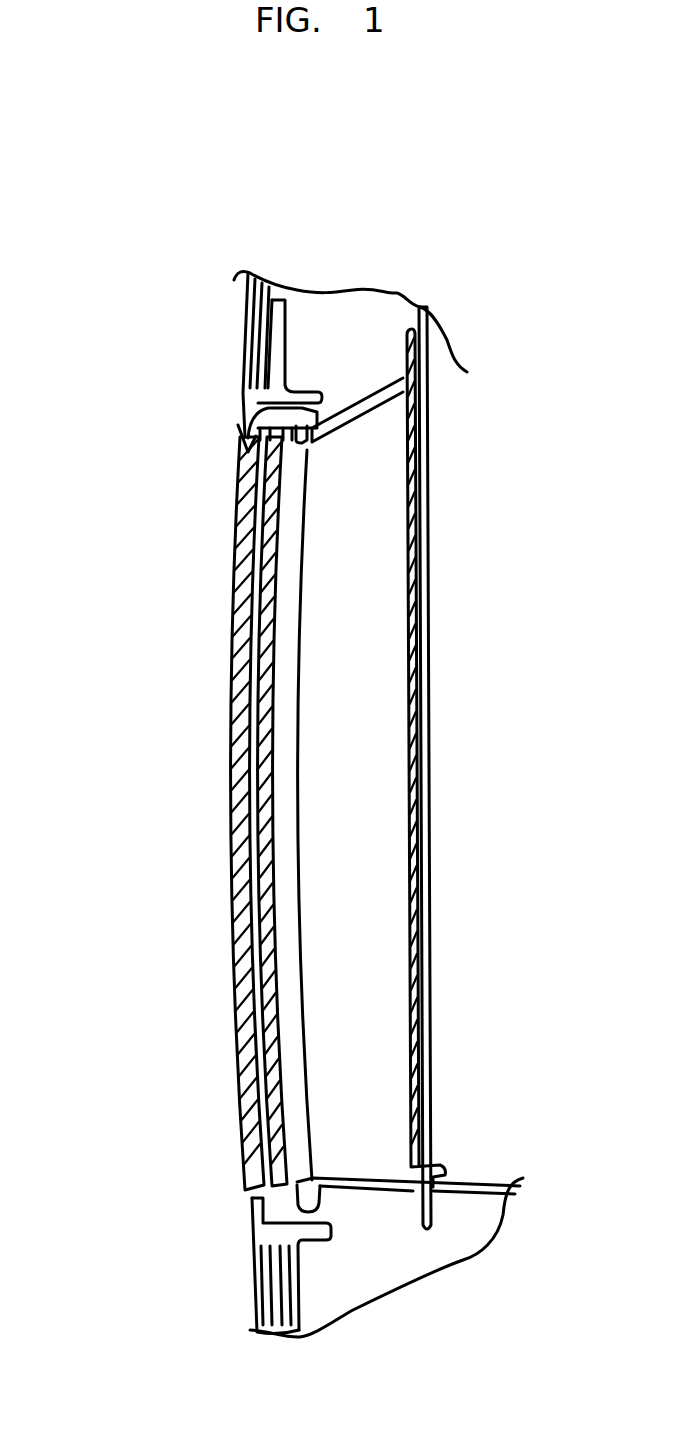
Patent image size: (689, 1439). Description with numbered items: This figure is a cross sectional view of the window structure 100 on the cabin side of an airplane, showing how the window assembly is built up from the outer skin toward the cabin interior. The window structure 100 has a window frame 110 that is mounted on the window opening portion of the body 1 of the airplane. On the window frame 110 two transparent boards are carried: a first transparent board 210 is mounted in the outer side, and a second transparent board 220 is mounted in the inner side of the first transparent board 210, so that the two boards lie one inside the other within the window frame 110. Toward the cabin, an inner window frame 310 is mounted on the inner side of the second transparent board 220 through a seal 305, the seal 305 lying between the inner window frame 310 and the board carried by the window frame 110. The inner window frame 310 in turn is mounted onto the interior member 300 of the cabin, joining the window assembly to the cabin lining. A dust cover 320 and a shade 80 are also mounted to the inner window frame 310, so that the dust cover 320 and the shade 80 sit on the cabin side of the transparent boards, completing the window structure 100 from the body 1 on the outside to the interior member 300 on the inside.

The body 1 is at (252, 301).
The shade 80 is at (420, 930).
The window structure 100 is at (185, 778).
The window frame 110 is at (253, 1227).
The first transparent board 210 is at (237, 593).
The second transparent board 220 is at (270, 985).
The interior member 300 is at (468, 1187).
The seal 305 is at (313, 440).
The inner window frame 310 is at (363, 418).
The dust cover 320 is at (415, 548).